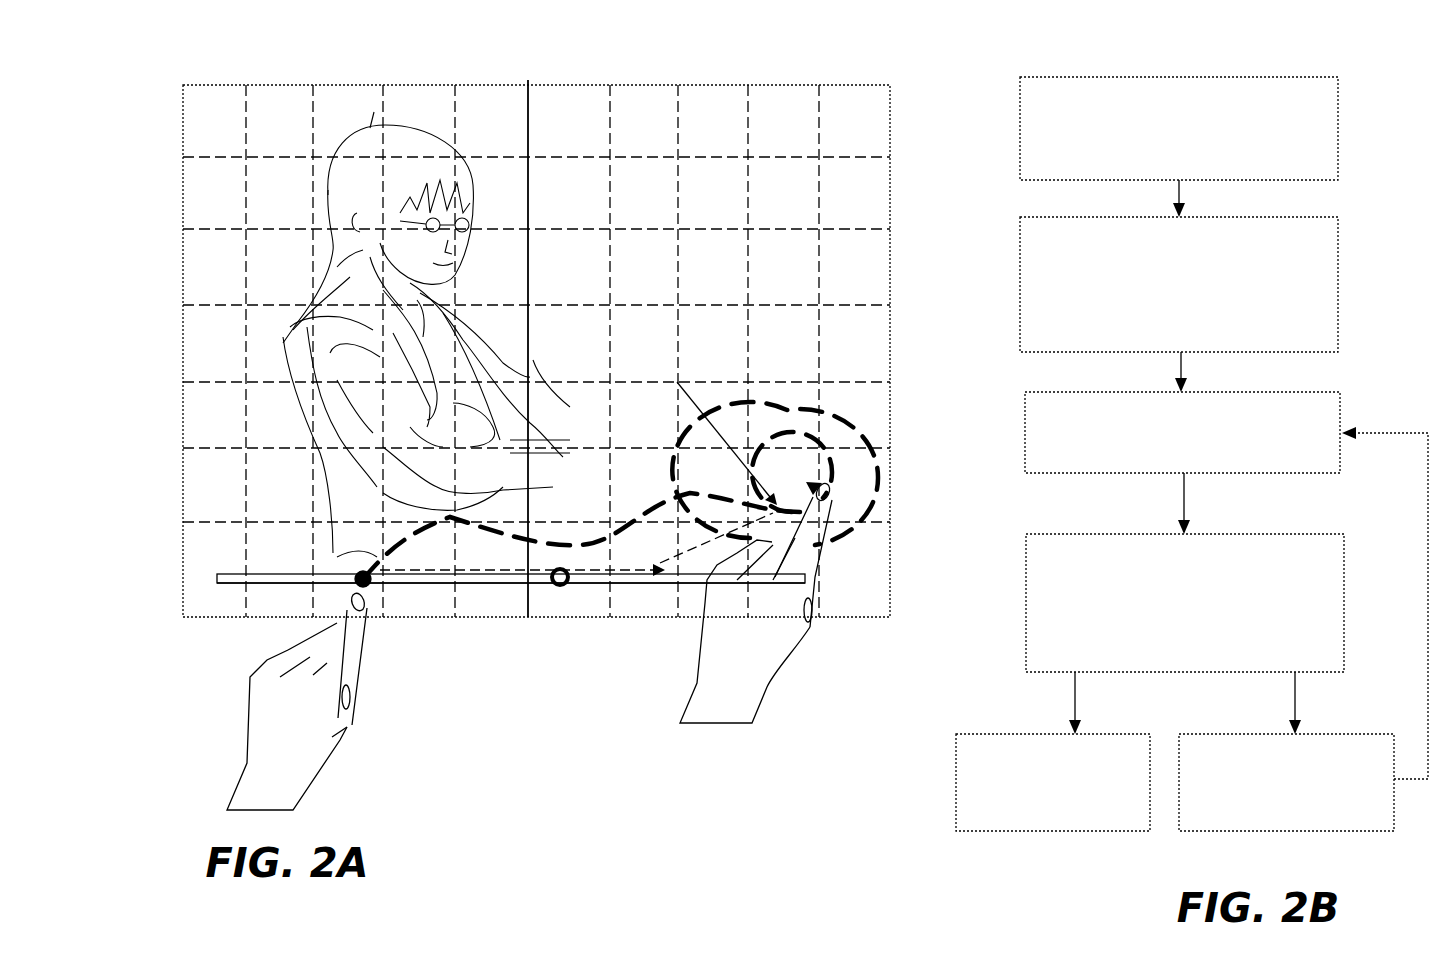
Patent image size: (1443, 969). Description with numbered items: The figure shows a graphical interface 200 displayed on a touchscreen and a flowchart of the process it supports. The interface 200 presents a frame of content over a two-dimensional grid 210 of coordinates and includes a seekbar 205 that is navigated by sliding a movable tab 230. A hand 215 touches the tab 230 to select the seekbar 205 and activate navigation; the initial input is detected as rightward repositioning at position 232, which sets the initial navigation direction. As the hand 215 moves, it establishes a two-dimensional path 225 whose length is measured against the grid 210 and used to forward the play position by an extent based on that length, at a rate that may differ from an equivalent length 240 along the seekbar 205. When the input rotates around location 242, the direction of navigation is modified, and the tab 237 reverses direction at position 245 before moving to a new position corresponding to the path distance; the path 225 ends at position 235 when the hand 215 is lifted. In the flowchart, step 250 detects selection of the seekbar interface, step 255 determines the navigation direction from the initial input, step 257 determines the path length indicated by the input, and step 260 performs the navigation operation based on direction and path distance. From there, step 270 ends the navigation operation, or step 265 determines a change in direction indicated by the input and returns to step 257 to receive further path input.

In FIG. 2A, the graphical interface 200 is at (200, 50).
In FIG. 2A, the 2D grid 210 is at (213, 160).
In FIG. 2A, the hand 215 is at (357, 720).
In FIG. 2A, the 2D path 225 is at (828, 410).
In FIG. 2A, the movable tab 230 is at (367, 593).
In FIG. 2A, the position 232 is at (375, 556).
In FIG. 2A, the position 235 is at (828, 483).
In FIG. 2A, the tab 237 is at (552, 583).
In FIG. 2A, the length 240 is at (453, 572).
In FIG. 2A, the location 242 is at (713, 428).
In FIG. 2A, the position 245 is at (650, 572).
In FIG. 2A, the seekbar 205 is at (598, 583).
In FIG. 2B, the step 250 is at (1250, 182).
In FIG. 2B, the step 255 is at (1310, 352).
In FIG. 2B, the step 257 is at (1025, 454).
In FIG. 2B, the step 260 is at (1026, 642).
In FIG. 2B, the step 265 is at (1223, 829).
In FIG. 2B, the step 270 is at (956, 811).